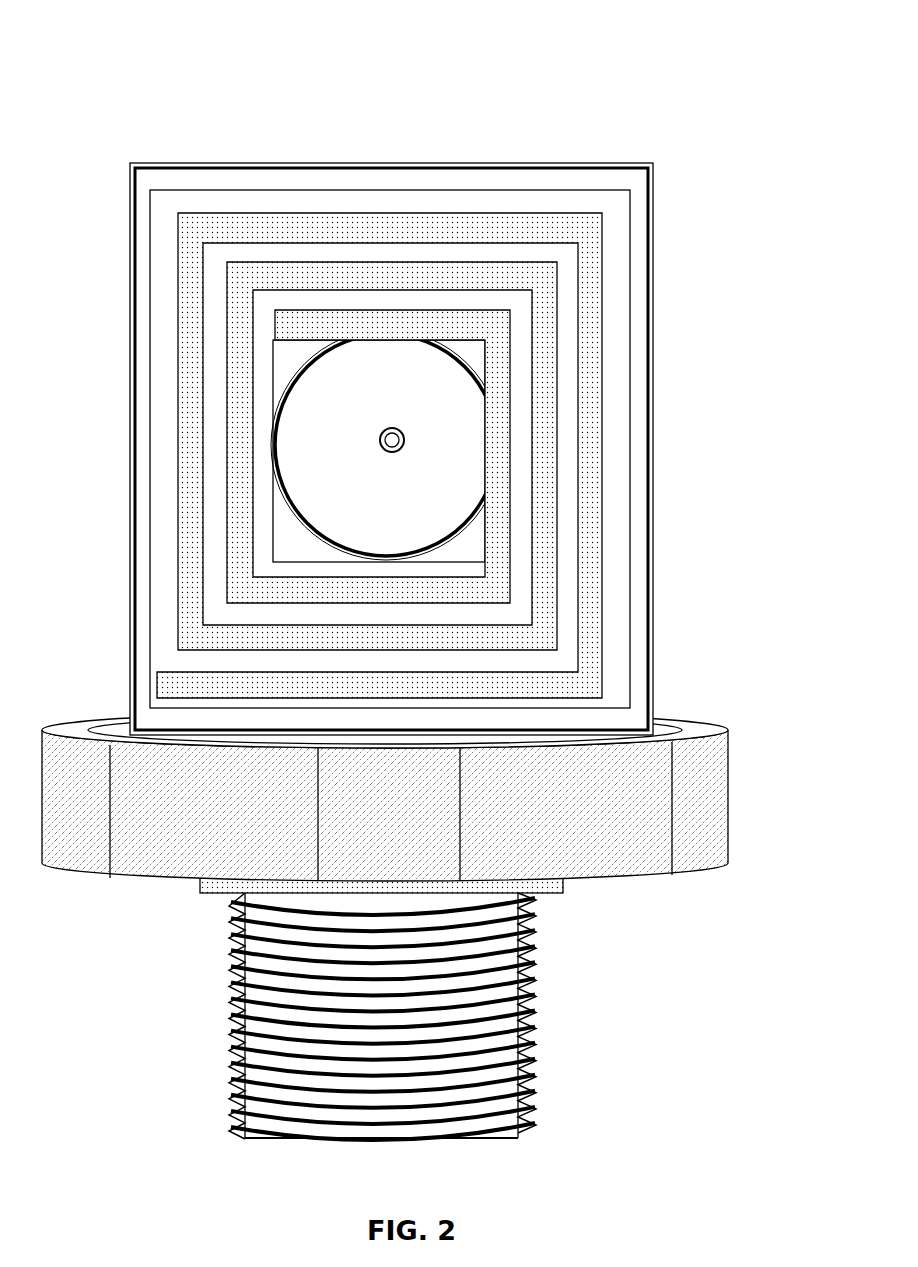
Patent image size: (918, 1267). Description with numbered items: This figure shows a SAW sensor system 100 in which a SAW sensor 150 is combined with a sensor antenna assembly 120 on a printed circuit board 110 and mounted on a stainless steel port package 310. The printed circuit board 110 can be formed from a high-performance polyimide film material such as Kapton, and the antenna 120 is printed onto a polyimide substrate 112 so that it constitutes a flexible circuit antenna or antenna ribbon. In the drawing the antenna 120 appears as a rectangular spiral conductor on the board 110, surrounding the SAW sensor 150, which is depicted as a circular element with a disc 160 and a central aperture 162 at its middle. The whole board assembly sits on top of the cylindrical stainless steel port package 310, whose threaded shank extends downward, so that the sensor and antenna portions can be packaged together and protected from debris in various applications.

The SAW sensor system 100 is at (458, 580).
The printed circuit board 110 is at (640, 215).
The polyimide substrate 112 is at (652, 509).
The sensor antenna assembly 120 is at (592, 417).
The SAW sensor 150 is at (288, 365).
The disc element 160 is at (428, 352).
The center aperture 162 is at (401, 430).
The stainless steel port package 310 is at (690, 817).